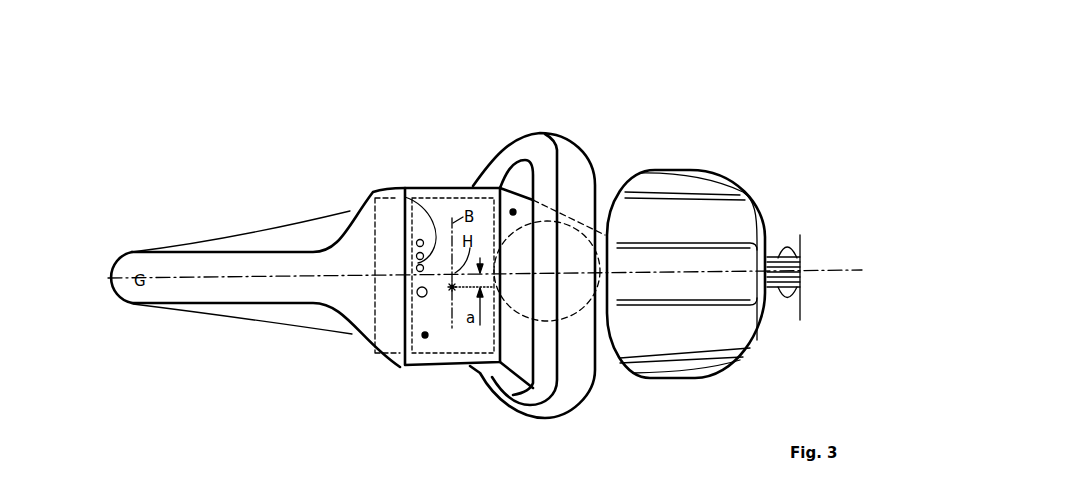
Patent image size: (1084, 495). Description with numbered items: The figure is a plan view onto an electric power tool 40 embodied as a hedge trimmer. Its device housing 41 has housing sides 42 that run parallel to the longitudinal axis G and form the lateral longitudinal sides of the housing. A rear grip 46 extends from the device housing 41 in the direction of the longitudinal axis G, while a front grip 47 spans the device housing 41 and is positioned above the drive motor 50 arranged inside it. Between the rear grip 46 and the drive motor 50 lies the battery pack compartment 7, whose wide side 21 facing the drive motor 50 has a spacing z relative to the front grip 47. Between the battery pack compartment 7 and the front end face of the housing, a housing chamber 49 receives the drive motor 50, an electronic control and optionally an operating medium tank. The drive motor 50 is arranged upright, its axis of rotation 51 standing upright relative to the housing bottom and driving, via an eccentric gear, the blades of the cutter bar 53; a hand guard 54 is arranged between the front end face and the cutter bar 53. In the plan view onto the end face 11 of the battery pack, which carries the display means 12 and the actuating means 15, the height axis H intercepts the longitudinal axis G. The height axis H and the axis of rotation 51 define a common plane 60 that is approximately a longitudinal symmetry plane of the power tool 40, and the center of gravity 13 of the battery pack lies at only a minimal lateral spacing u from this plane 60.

The power tool 40 is at (290, 157).
The rear grip 46 is at (195, 292).
The housing sides 42 is at (440, 185).
The display means 12 is at (407, 197).
The common plane 60 is at (353, 285).
The wide side 21 is at (405, 238).
The actuating means 15 is at (418, 297).
The end face 11 is at (425, 335).
The center of gravity 13 is at (452, 288).
The device housing 41 is at (523, 192).
The front grip 47 is at (570, 153).
The housing chamber 49 is at (513, 212).
The battery pack compartment 7 is at (478, 370).
The drive motor 50 is at (523, 317).
The axis of rotation 51 is at (548, 273).
The hand guard 54 is at (702, 187).
The cutter bar 53 is at (787, 240).